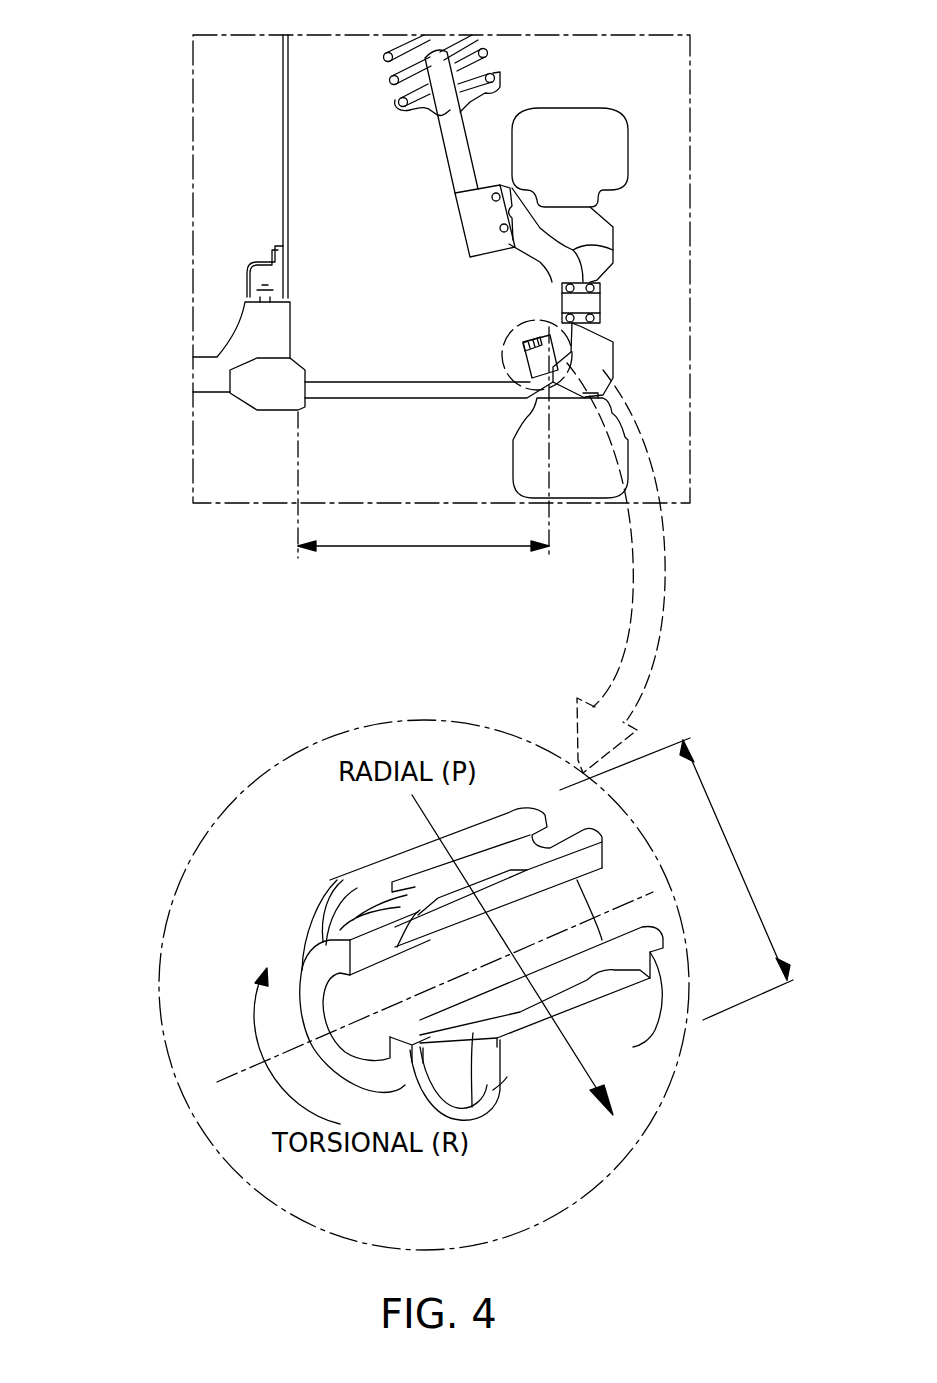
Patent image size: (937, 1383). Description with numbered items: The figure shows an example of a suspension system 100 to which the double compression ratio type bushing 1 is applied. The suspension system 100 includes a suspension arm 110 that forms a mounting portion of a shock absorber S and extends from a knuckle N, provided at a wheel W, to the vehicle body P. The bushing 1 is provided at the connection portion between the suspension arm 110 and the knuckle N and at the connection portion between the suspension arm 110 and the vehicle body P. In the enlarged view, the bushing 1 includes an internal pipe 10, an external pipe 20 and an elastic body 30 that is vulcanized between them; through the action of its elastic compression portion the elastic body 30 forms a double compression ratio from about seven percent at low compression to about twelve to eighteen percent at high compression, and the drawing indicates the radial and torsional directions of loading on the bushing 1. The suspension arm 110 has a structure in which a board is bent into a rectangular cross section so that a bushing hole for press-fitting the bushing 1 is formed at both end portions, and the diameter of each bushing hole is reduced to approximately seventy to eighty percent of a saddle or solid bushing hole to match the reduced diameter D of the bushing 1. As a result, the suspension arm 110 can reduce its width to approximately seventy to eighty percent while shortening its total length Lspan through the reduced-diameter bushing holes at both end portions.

The bushing 1 is at (75, 782).
The internal pipe 10 is at (320, 959).
The external pipe 20 is at (400, 863).
The elastic body 30 is at (327, 895).
The suspension system 100 is at (441, 404).
The suspension arm 110 is at (365, 382).
The vehicle body P is at (283, 158).
The shock absorber S is at (460, 142).
The wheel W is at (620, 155).
The knuckle N is at (605, 258).
The reduced diameter D is at (676, 879).
The total length Lspan is at (423, 456).